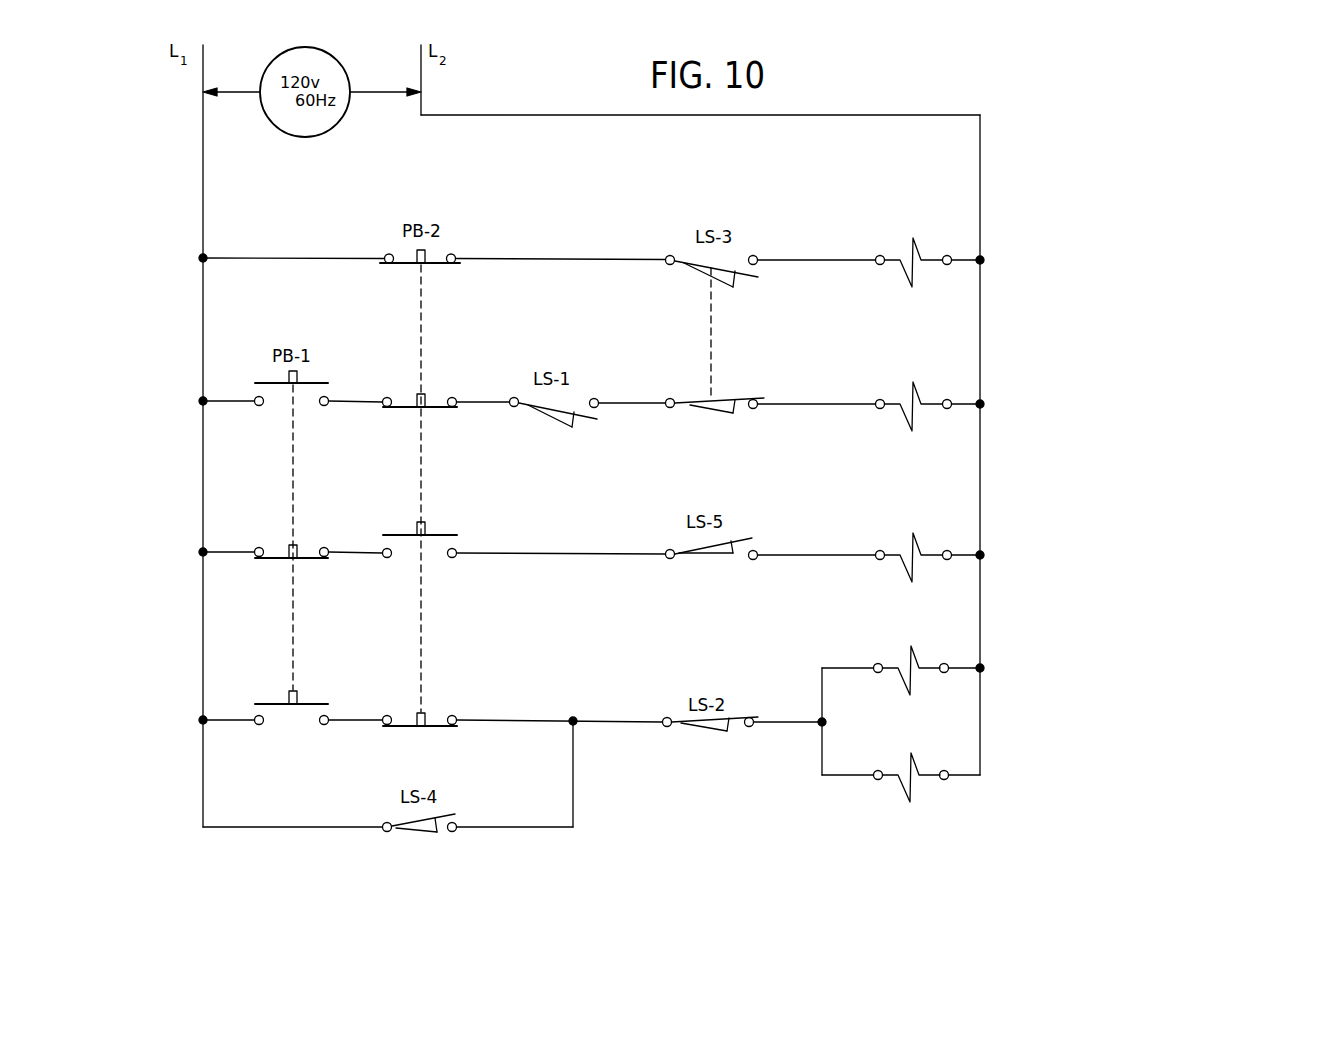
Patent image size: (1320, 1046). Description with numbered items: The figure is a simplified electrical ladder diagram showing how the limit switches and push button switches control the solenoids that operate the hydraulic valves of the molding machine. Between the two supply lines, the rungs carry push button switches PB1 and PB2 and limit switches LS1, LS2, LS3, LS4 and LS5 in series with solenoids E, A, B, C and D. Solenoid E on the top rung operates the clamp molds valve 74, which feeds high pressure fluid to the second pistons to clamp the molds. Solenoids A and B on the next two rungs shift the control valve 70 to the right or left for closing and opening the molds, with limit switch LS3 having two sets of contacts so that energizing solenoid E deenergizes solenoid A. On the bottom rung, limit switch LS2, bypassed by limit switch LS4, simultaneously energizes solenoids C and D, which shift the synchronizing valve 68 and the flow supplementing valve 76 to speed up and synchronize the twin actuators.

The valve 74 is at (1009, 251).
The control valve 70 is at (1005, 471).
The synchronizing valve 68 is at (1039, 663).
The flow supplementing valve 76 is at (972, 769).